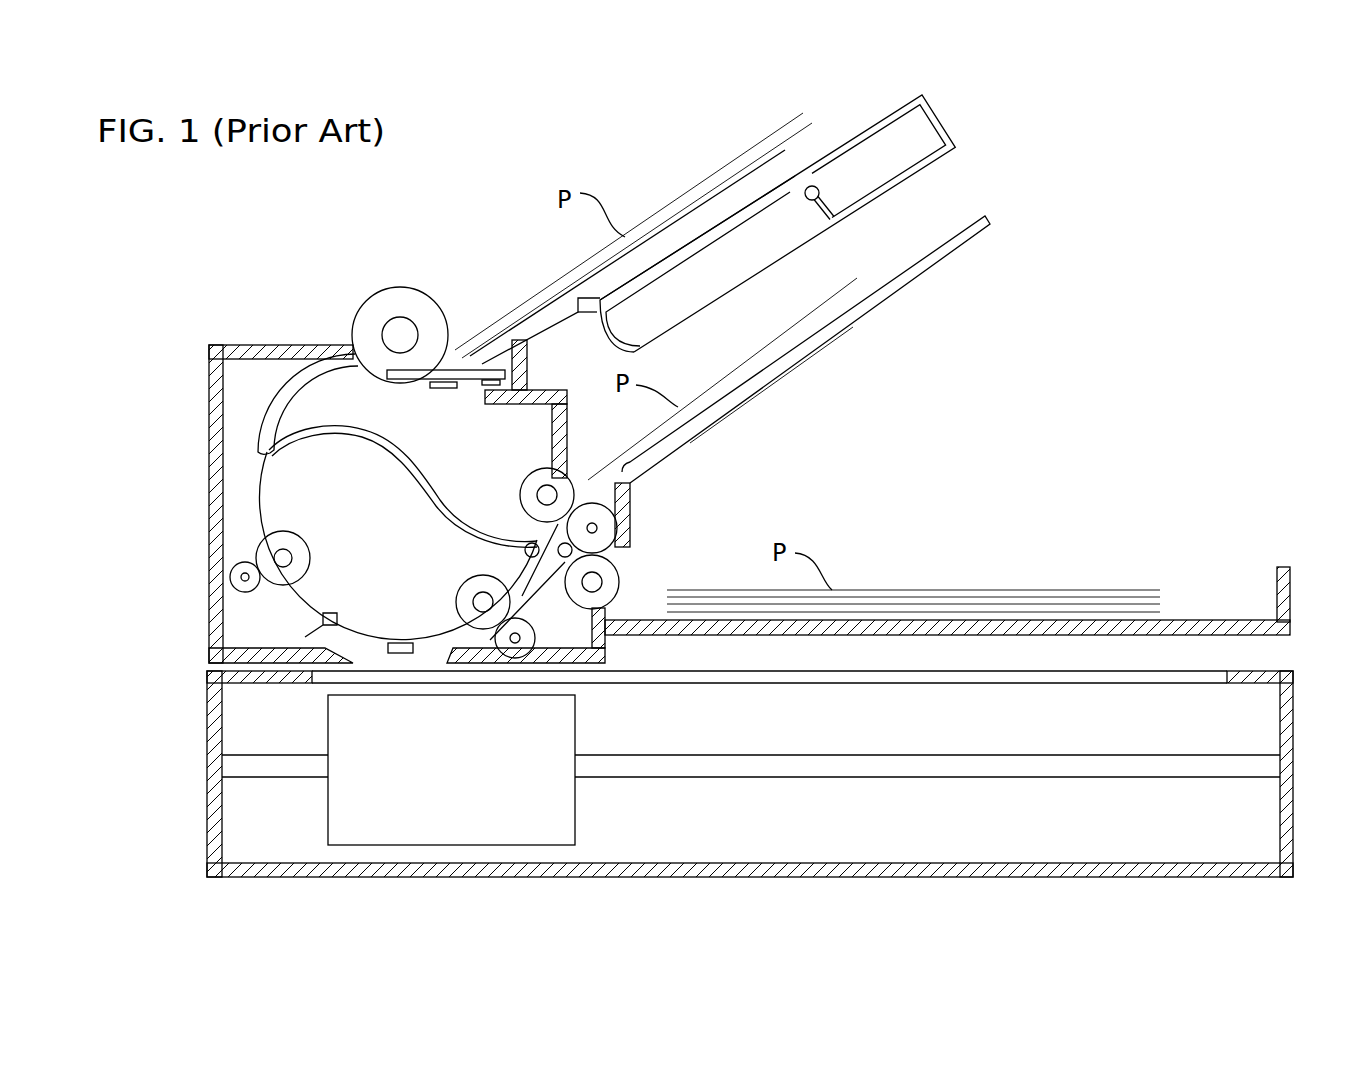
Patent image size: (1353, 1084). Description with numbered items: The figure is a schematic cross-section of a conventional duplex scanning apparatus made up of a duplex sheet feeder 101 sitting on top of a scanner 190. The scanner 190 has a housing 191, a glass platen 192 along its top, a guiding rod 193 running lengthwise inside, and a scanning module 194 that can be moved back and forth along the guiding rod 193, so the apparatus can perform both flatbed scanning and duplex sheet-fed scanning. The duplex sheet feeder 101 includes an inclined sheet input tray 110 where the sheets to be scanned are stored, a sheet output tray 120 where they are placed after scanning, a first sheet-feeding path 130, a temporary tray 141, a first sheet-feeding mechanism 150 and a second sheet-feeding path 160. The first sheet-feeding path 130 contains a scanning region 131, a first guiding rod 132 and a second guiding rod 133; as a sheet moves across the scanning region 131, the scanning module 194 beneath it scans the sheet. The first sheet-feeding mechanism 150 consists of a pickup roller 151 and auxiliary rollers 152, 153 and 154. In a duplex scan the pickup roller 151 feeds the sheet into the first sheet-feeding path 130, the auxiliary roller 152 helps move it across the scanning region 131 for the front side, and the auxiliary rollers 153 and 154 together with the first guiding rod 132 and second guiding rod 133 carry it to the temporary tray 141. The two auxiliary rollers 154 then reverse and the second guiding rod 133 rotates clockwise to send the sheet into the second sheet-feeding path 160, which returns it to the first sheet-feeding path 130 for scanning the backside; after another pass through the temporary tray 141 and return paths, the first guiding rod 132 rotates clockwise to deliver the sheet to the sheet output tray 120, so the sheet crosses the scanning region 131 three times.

The duplex sheet feeder 101 is at (204, 382).
The sheet input tray 110 is at (905, 177).
The sheet output tray 120 is at (1180, 628).
The first sheet-feeding path 130 is at (257, 458).
The scanning region 131 is at (385, 658).
The first guiding rod 132 is at (560, 565).
The second guiding rod 133 is at (555, 532).
The temporary tray 141 is at (972, 243).
The first sheet-feeding mechanism 150 is at (716, 408).
The pickup roller 151 is at (372, 315).
The auxiliary roller 152 is at (240, 575).
The auxiliary roller 153 is at (500, 603).
The auxiliary rollers 154 is at (532, 490).
The second sheet-feeding path 160 is at (390, 466).
The scanner 190 is at (695, 774).
The housing 191 is at (215, 852).
The glass platen 192 is at (325, 683).
The guiding rod 193 is at (1073, 765).
The scanning module 194 is at (333, 832).